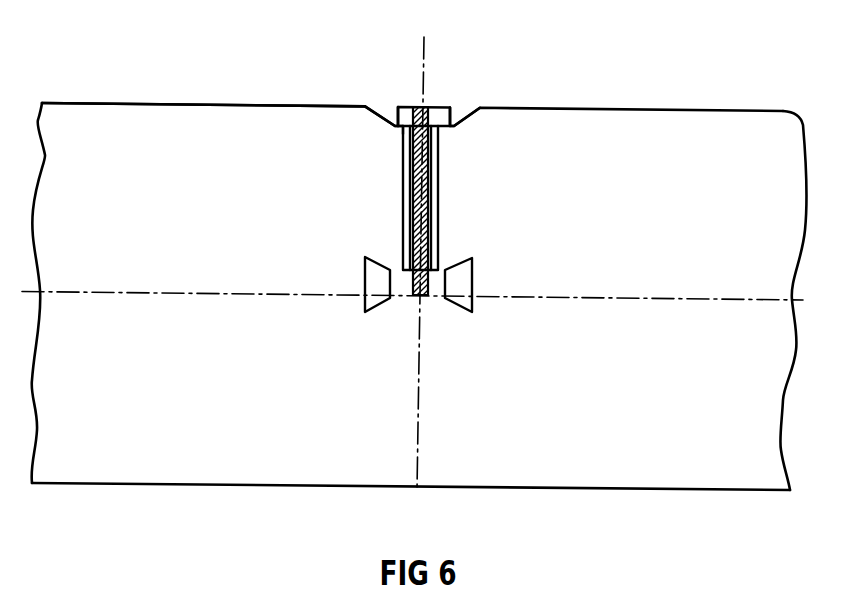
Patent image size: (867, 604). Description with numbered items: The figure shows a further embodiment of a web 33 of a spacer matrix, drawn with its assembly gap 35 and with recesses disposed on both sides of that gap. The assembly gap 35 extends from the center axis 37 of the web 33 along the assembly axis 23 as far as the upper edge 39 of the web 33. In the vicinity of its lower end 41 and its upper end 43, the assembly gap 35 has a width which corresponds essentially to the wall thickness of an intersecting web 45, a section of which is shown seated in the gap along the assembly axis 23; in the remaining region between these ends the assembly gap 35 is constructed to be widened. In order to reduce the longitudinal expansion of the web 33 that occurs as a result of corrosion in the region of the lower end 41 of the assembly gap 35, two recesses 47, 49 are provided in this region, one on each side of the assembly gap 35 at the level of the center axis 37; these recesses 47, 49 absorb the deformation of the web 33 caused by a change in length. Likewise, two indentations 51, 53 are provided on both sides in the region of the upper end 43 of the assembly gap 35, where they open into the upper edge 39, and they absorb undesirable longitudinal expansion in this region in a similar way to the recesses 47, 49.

The assembly axis 23 is at (425, 58).
The web 33 is at (698, 104).
The assembly gap 35 is at (440, 187).
The center axis 37 is at (725, 300).
The upper edge 39 is at (172, 103).
The lower end 41 is at (405, 290).
The upper end 43 is at (413, 122).
The intersecting web 45 is at (420, 107).
The recess 47 is at (363, 278).
The recess 49 is at (473, 282).
The indentation 51 is at (390, 108).
The indentation 53 is at (460, 110).